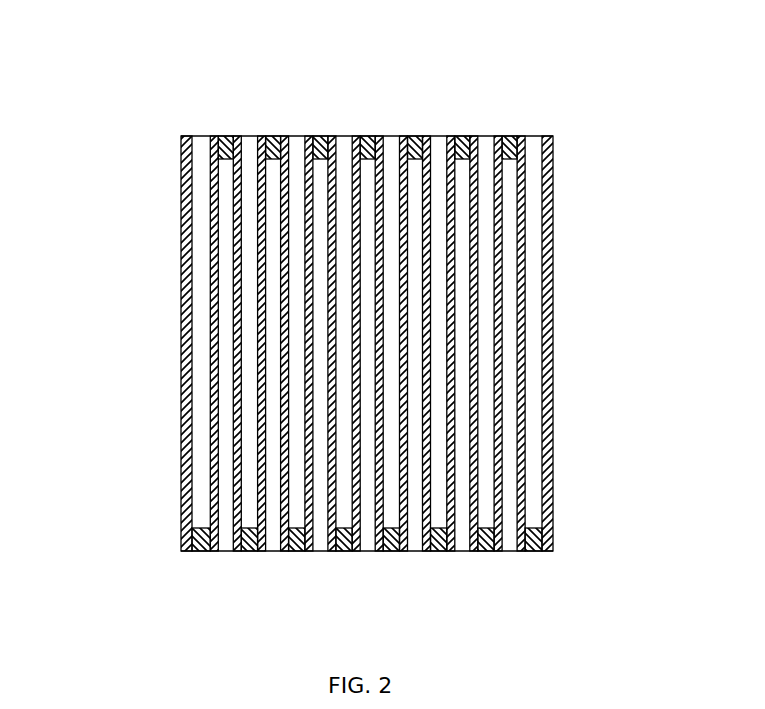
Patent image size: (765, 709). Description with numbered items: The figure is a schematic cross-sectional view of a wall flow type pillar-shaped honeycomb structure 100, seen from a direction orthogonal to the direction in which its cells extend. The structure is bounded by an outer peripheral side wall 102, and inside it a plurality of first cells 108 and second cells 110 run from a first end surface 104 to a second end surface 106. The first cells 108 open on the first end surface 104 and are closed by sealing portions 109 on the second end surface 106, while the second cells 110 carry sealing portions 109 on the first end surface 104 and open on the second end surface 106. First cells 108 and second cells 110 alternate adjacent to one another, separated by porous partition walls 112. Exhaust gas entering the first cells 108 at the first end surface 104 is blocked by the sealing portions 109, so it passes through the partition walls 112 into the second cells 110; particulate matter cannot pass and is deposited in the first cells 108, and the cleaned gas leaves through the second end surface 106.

The pillar-shaped honeycomb structure 100 is at (351, 97).
The outer peripheral side wall 102 is at (181, 182).
The first end surface 104 is at (183, 552).
The second end surface 106 is at (186, 135).
The first cell 108 is at (222, 548).
The sealing portion 109 is at (508, 147).
The second cell 110 is at (251, 138).
The partition wall 112 is at (211, 292).